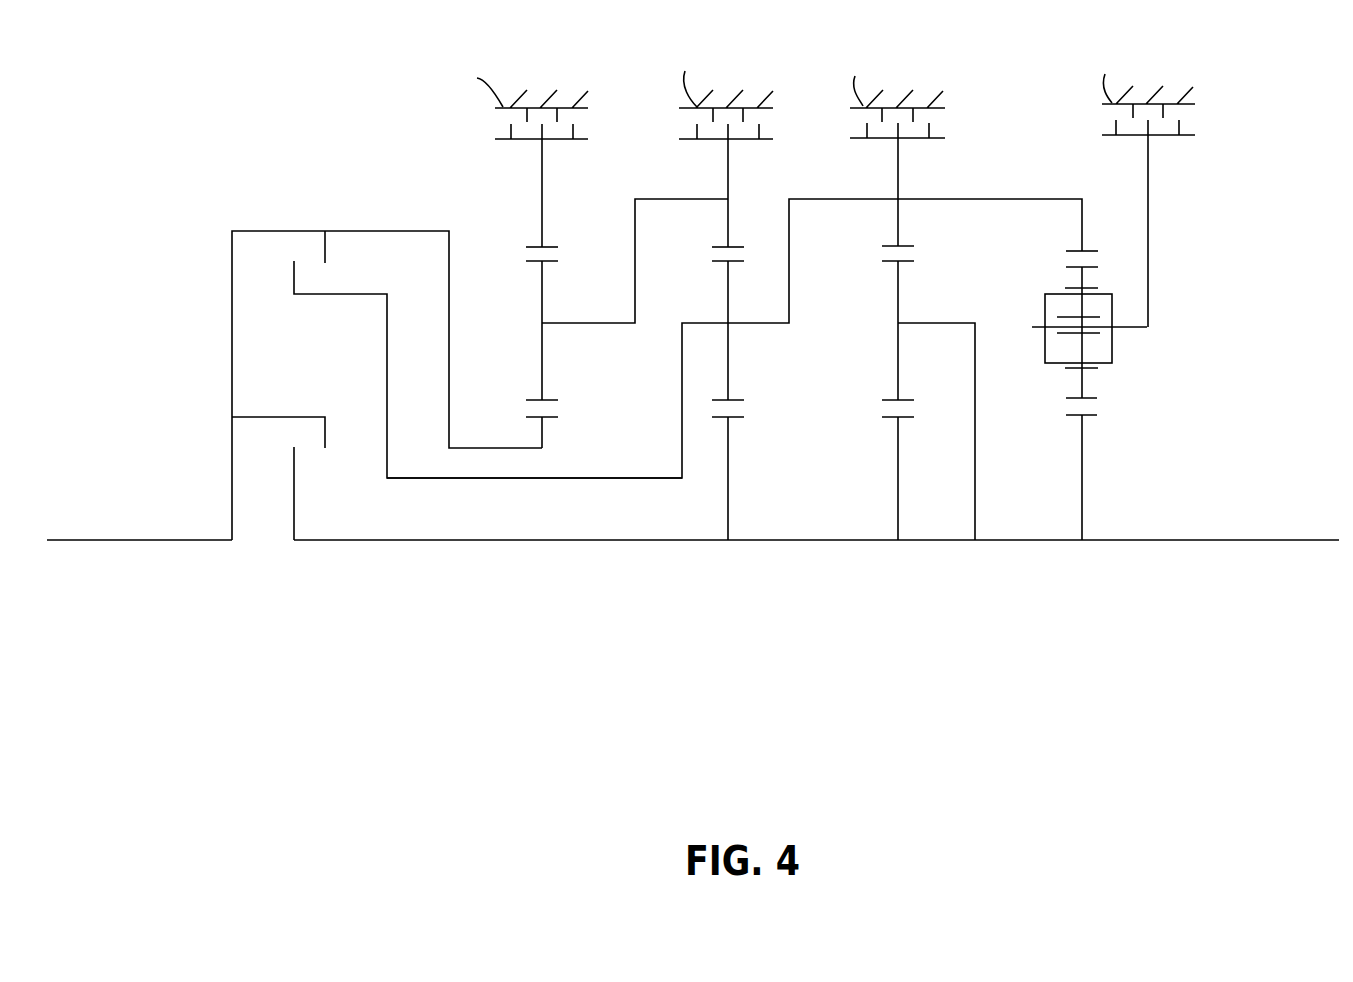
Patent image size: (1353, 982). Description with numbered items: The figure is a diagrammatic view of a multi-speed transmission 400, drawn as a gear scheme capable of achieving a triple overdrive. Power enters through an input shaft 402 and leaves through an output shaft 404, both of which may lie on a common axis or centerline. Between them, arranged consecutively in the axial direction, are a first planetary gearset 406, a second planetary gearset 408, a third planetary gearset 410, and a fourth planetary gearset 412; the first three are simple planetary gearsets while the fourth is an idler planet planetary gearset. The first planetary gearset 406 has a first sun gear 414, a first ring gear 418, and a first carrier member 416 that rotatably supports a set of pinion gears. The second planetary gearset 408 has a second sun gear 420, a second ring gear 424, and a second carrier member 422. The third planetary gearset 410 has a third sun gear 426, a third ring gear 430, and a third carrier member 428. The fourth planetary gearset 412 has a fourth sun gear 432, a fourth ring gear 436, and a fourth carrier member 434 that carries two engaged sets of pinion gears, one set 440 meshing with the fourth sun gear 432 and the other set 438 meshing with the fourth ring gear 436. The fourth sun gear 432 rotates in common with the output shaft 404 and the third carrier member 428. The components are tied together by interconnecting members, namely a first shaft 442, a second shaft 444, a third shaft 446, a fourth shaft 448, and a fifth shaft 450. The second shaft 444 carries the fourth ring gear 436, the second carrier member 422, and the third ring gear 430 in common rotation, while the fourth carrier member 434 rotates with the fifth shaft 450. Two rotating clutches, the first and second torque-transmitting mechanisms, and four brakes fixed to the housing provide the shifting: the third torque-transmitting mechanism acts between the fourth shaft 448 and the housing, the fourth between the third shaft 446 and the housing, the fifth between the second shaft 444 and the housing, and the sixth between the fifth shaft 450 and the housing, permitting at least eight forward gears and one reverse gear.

The multi-speed transmission 400 is at (214, 93).
The input shaft 402 is at (92, 540).
The output shaft 404 is at (1265, 540).
The first planetary gearset 406 is at (538, 423).
The second planetary gearset 408 is at (755, 423).
The third planetary gearset 410 is at (900, 422).
The fourth planetary gearset 412 is at (1109, 421).
The first sun gear 414 is at (552, 418).
The first carrier member 416 is at (542, 297).
The first ring gear 418 is at (553, 246).
The second sun gear 420 is at (735, 418).
The second carrier member 422 is at (728, 307).
The second ring gear 424 is at (728, 246).
The third sun gear 426 is at (905, 418).
The third carrier member 428 is at (898, 372).
The third ring gear 430 is at (905, 246).
The fourth sun gear 432 is at (1088, 417).
The fourth carrier member 434 is at (1022, 354).
The fourth ring gear 436 is at (1082, 250).
The set of pinion gears 438 is at (1067, 288).
The set of pinion gears 440 is at (1093, 369).
The first shaft 442 is at (350, 540).
The second shaft 444 is at (450, 478).
The third shaft 446 is at (682, 199).
The fourth shaft 448 is at (542, 188).
The fifth shaft 450 is at (1148, 256).